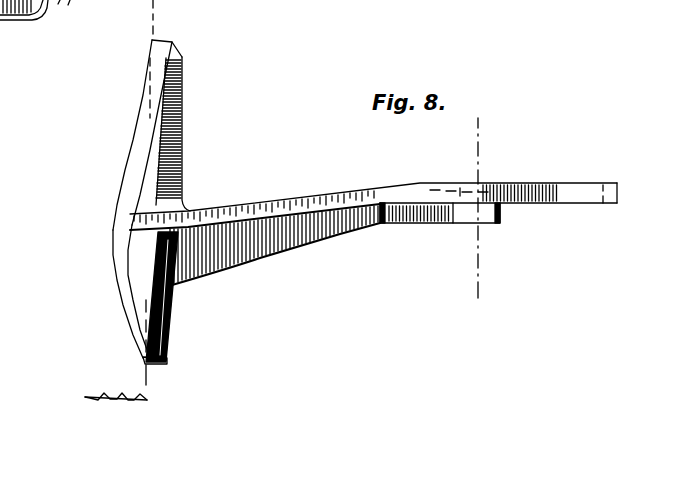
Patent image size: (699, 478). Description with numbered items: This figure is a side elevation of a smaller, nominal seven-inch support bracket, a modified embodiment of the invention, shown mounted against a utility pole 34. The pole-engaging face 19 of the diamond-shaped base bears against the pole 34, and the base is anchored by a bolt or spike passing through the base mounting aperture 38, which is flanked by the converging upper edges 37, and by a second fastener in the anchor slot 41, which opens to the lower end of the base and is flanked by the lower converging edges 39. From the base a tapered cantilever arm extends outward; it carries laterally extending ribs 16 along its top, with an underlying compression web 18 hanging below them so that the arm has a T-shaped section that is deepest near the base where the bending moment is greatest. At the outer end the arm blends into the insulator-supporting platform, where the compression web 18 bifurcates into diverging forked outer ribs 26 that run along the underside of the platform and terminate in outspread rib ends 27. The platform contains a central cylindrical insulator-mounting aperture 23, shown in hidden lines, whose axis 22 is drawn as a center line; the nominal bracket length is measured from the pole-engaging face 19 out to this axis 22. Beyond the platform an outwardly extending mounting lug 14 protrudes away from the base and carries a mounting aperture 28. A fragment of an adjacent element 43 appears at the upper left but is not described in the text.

The mounting lug 14 is at (625, 209).
The laterally extending ribs 16 is at (279, 207).
The compression web 18 is at (275, 248).
The pole-engaging face 19 is at (150, 70).
The axis of insulator-mounting aperture 22 is at (480, 282).
The insulator-mounting aperture 23 is at (428, 186).
The forked outer ribs 26 is at (450, 225).
The rib ends 27 is at (502, 218).
The mounting aperture 28 is at (595, 189).
The utility pole 34 is at (103, 391).
The converging upper edges 37 is at (133, 125).
The base mounting aperture 38 is at (174, 109).
The lower converging edges 39 is at (122, 303).
The anchor slot 41 is at (168, 326).
The adjacent member 43 is at (13, 74).